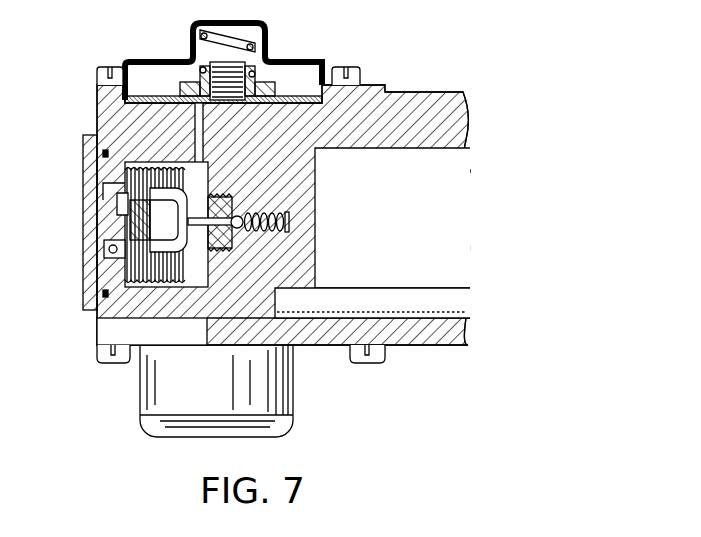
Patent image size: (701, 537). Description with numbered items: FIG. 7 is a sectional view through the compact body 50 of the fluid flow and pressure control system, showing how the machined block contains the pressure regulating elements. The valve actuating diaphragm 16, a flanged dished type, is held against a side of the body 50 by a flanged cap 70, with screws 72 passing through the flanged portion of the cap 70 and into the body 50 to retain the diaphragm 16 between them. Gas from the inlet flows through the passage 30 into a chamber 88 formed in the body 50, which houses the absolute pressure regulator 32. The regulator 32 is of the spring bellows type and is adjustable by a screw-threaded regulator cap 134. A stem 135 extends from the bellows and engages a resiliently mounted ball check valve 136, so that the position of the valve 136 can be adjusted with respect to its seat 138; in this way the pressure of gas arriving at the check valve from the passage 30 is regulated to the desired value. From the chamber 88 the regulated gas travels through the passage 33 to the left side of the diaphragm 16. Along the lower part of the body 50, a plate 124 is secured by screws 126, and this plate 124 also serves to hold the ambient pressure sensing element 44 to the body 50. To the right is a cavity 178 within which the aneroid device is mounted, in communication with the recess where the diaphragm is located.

The valve actuating diaphragm 16 is at (308, 78).
The passage 30 is at (258, 233).
The absolute pressure regulator 32 is at (178, 258).
The passage 33 is at (204, 130).
The ambient pressure sensing element 44 is at (455, 312).
The body 50 is at (415, 92).
The flanged cap 70 is at (273, 58).
The screws 72 is at (105, 66).
The chamber 88 is at (210, 175).
The plate 124 is at (293, 398).
The screws 126 is at (98, 362).
The regulator cap 134 is at (98, 212).
The stem 135 is at (203, 217).
The ball check valve 136 is at (260, 210).
The seat 138 is at (208, 236).
The cavity 178 is at (462, 221).